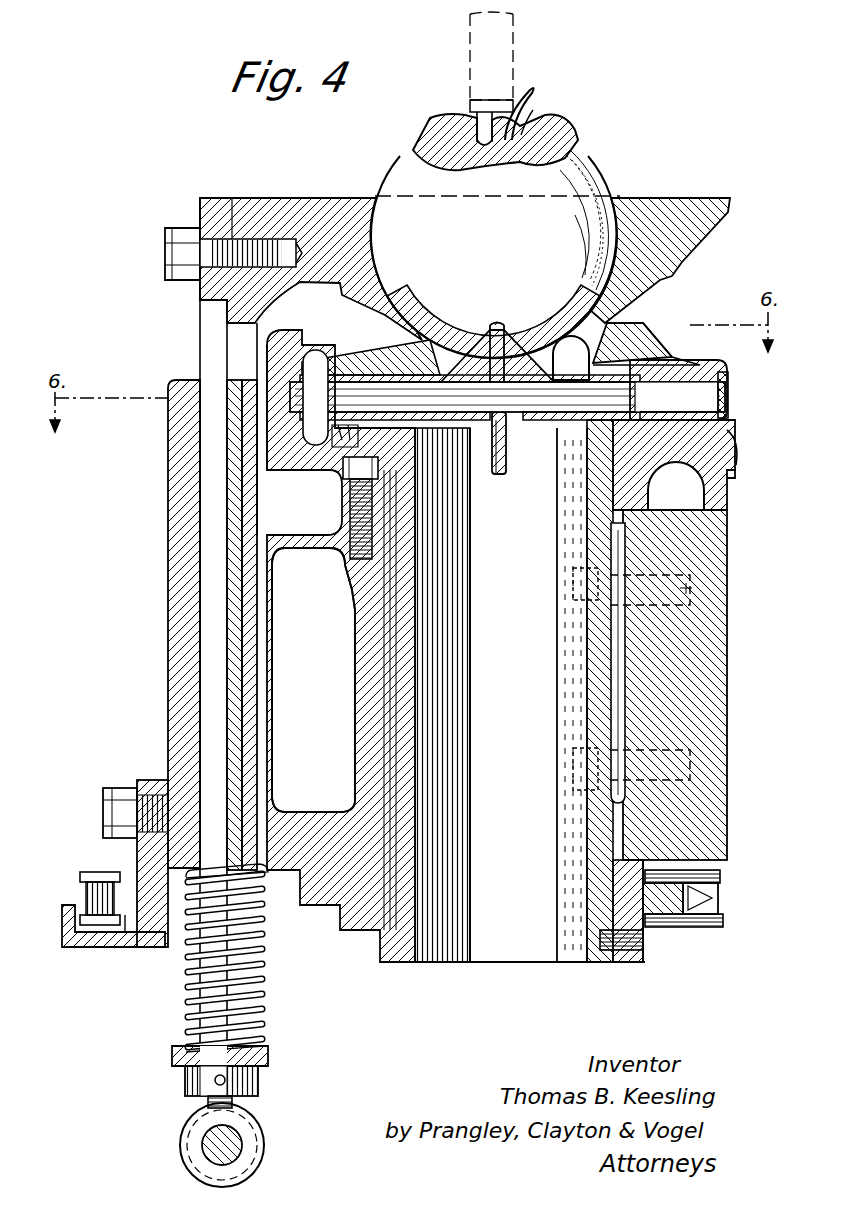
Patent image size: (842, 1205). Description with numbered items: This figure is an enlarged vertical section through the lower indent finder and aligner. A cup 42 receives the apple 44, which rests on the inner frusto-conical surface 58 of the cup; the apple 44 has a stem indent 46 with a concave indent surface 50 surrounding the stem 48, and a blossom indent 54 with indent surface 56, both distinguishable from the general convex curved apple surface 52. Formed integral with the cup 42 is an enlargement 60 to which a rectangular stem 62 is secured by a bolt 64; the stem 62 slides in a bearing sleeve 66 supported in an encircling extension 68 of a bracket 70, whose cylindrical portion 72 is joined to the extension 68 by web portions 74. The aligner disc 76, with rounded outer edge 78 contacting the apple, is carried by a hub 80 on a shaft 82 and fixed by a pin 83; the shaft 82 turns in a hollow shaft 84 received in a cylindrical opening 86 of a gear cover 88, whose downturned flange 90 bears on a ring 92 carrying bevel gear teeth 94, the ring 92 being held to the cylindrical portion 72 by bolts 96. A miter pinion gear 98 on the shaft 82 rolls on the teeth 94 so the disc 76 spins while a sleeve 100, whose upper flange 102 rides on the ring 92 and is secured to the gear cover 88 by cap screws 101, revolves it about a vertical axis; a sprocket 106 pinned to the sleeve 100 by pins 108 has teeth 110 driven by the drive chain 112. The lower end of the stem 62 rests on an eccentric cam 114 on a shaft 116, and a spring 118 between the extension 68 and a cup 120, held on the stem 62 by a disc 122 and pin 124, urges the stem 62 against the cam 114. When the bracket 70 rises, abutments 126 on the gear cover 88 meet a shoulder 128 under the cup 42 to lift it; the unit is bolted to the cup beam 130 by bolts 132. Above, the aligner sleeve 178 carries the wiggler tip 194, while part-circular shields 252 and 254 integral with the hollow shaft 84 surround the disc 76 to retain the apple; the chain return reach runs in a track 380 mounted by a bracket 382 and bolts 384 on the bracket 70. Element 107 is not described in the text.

The cup 42 is at (299, 188).
The apple 44 is at (585, 150).
The stem indent 46 is at (530, 112).
The stem 48 is at (530, 95).
The indent surface 50 is at (472, 122).
The curved apple surface 52 is at (393, 160).
The blossom indent 54 is at (482, 360).
The indent surface 56 is at (430, 340).
The frusto-conical surface 58 is at (655, 258).
The enlargement 60 is at (268, 205).
The stem 62 is at (205, 352).
The bolt 64 is at (168, 250).
The bearing sleeve 66 is at (190, 600).
The extension 68 is at (175, 676).
The bracket 70 is at (168, 726).
The cylindrical portion 72 is at (355, 684).
The web portions 74 is at (304, 550).
The aligner disc 76 is at (520, 430).
The outer edge 78 is at (500, 478).
The hub 80 is at (490, 435).
The shaft 82 is at (668, 370).
The pin 83 is at (492, 428).
The hollow shaft 84 is at (398, 383).
The cylindrical opening 86 is at (735, 380).
The gear cover 88 is at (733, 424).
The downturned flange 90 is at (738, 445).
The ring 92 is at (735, 480).
The bevel gear teeth 94 is at (700, 412).
The bolts 96 is at (316, 472).
The miter pinion gear 98 is at (316, 332).
The sleeve 100 is at (420, 918).
The cap screws 101 is at (567, 247).
The flange 102 is at (608, 435).
The sprocket 106 is at (648, 935).
The sleeve 107 is at (626, 828).
The pins 108 is at (365, 940).
The teeth 110 is at (712, 900).
The drive chain 112 is at (722, 880).
The cam 114 is at (262, 1135).
The shaft 116 is at (205, 1140).
The spring 118 is at (185, 1002).
The cup 120 is at (175, 1058).
The disc 122 is at (262, 1080).
The pin 124 is at (210, 1080).
The abutments 126 is at (640, 338).
The shoulder 128 is at (660, 318).
The cup beam 130 is at (718, 640).
The bolts 132 is at (735, 580).
The aligner sleeve 178 is at (468, 22).
The wiggler tip 194 is at (472, 100).
The shield 252 is at (564, 217).
The shield 254 is at (534, 280).
The track 380 is at (98, 948).
The bracket 382 is at (140, 856).
The bolts 384 is at (105, 812).